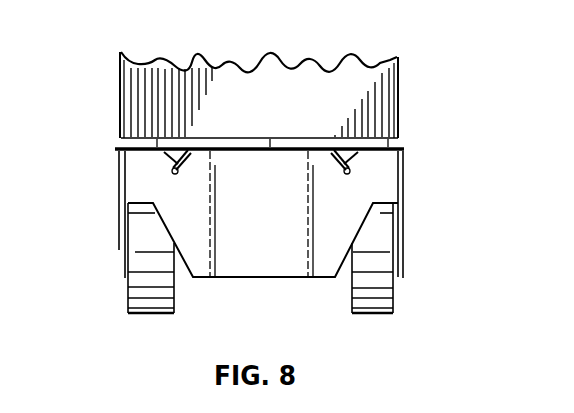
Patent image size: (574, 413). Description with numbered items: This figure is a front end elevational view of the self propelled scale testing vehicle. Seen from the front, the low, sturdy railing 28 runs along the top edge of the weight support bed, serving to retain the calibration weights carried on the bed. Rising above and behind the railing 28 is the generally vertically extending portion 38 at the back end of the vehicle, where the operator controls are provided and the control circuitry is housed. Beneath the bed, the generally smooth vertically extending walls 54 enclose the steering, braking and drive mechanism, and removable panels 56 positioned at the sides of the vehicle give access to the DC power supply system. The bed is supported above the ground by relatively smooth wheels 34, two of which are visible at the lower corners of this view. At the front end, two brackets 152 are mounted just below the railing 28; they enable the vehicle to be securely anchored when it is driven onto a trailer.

The railing 28 is at (257, 138).
The vertically extending portion 38 is at (392, 100).
The bracket 152 is at (167, 163).
The removable panel 56 is at (118, 205).
The vertically extending wall 54 is at (121, 266).
The wheel 34 is at (150, 304).